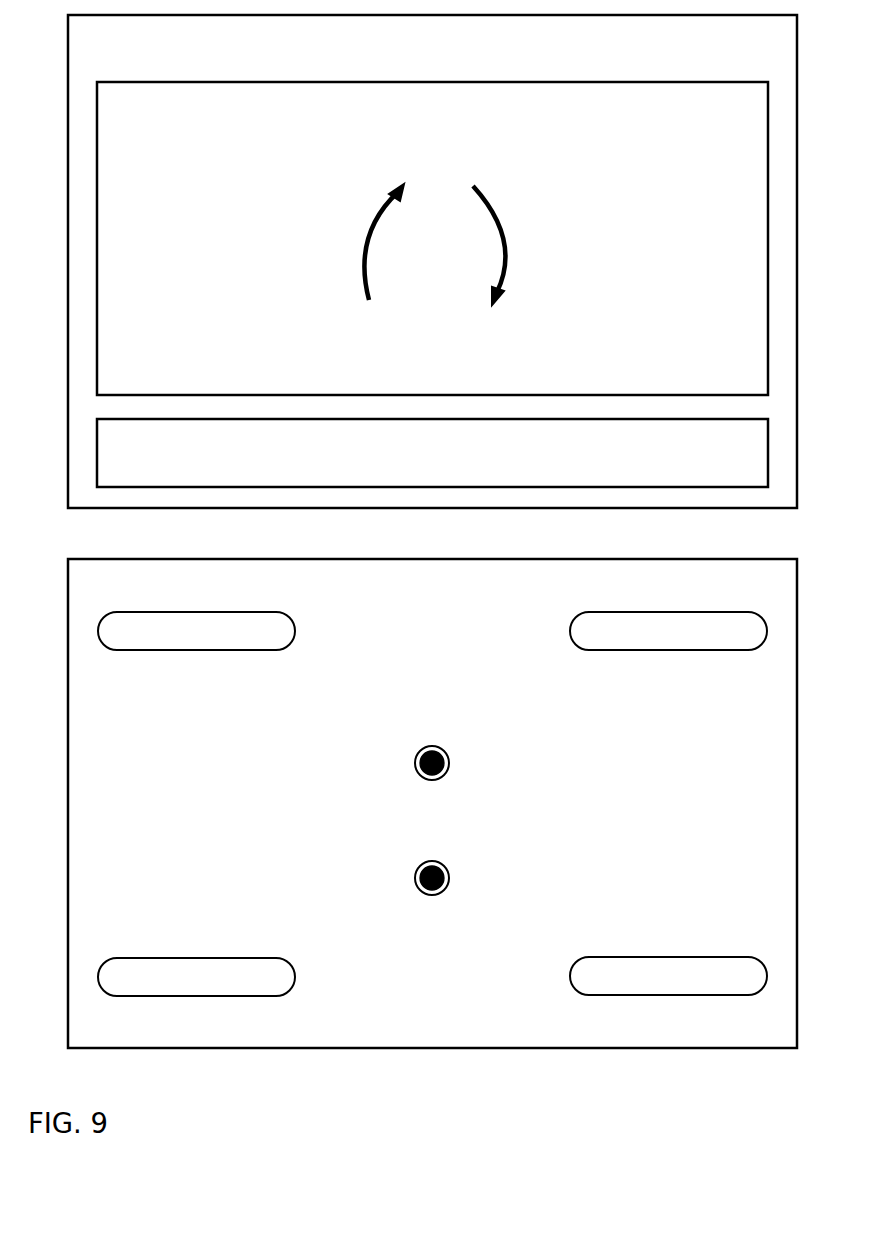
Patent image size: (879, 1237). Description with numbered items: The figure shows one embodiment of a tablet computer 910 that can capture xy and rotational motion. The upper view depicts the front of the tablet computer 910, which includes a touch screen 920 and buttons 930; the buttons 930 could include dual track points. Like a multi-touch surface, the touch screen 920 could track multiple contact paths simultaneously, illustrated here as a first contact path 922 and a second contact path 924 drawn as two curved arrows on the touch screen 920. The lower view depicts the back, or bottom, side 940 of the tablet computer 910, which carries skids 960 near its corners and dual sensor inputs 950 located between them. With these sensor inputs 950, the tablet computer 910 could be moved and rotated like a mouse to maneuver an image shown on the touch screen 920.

The tablet computer 910 is at (438, 58).
The touch screen 920 is at (413, 125).
The first contact path 922 is at (362, 254).
The second contact path 924 is at (510, 248).
The buttons 930 is at (318, 460).
The back, or bottom, side 940 is at (364, 602).
The dual sensor inputs 950 is at (414, 878).
The skids 960 is at (603, 977).